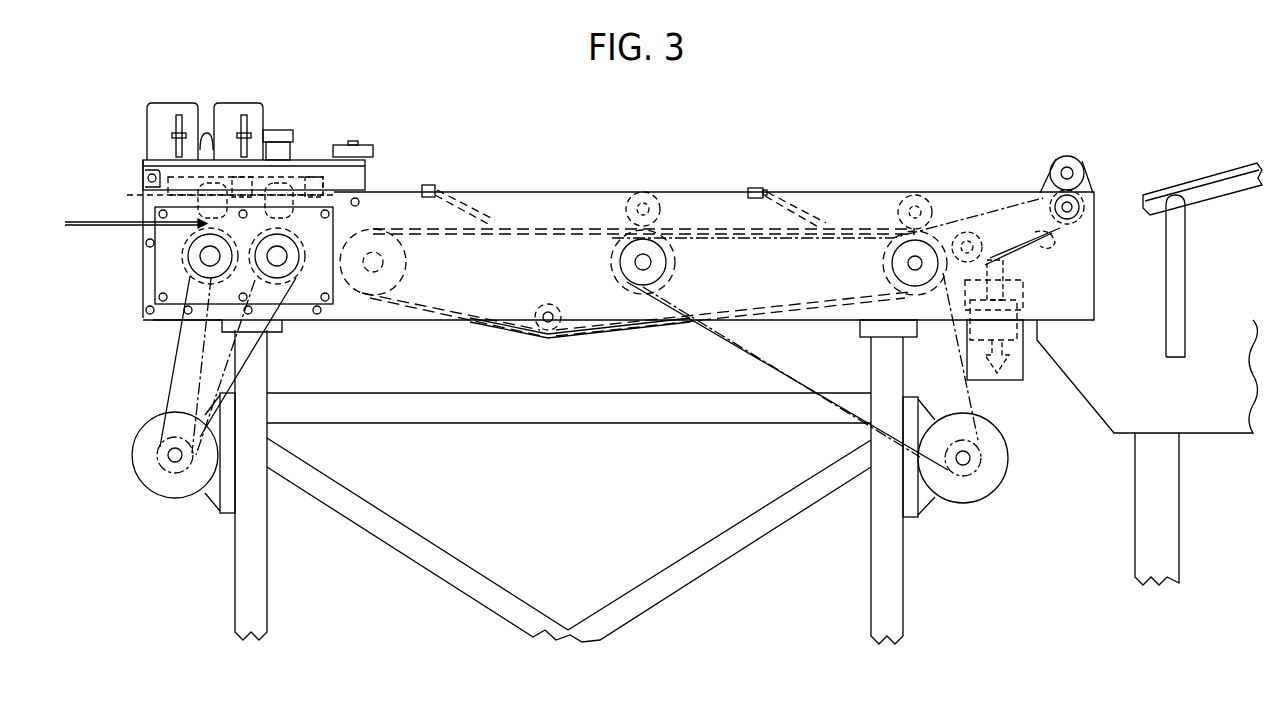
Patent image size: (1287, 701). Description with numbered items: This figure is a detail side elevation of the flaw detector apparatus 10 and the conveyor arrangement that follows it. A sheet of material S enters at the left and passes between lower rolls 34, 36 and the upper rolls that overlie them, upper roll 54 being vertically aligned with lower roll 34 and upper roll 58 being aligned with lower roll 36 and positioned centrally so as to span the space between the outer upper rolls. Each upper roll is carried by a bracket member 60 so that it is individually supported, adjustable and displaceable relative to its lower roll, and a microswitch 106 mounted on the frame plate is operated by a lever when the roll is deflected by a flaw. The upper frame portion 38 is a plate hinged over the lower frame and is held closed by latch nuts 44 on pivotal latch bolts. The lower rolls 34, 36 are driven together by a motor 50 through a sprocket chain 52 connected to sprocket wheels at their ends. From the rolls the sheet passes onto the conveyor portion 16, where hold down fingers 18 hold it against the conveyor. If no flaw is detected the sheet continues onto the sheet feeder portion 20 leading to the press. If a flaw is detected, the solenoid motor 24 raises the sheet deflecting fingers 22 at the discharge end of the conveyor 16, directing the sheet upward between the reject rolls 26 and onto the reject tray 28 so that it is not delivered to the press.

The flaw detector apparatus 10 is at (322, 76).
The conveyor portion 16 is at (696, 225).
The hold down fingers 18 is at (479, 216).
The sheet feeder portion 20 is at (1224, 311).
The sheet deflecting fingers 22 is at (1043, 245).
The solenoid motor 24 is at (1017, 340).
The reject rolls 26 is at (1090, 159).
The reject tray 28 is at (1215, 173).
The lower roll 34 is at (300, 310).
The lower roll 36 is at (207, 312).
The upper frame portion 38 is at (275, 160).
The latch nuts 44 is at (363, 145).
The motor 50 is at (167, 487).
The sprocket chain 52 is at (170, 352).
The upper roll 54 is at (338, 222).
The upper roll 58 is at (150, 195).
The bracket member 60 is at (170, 173).
The microswitch 106 is at (218, 102).
The sheet of material S is at (97, 223).